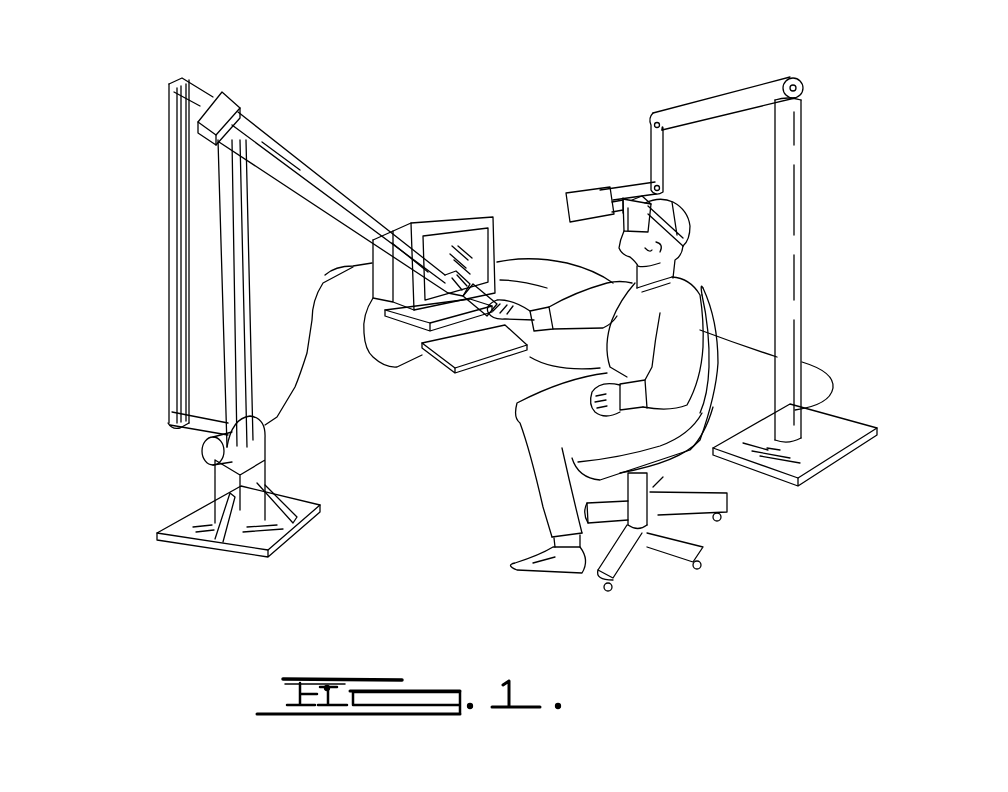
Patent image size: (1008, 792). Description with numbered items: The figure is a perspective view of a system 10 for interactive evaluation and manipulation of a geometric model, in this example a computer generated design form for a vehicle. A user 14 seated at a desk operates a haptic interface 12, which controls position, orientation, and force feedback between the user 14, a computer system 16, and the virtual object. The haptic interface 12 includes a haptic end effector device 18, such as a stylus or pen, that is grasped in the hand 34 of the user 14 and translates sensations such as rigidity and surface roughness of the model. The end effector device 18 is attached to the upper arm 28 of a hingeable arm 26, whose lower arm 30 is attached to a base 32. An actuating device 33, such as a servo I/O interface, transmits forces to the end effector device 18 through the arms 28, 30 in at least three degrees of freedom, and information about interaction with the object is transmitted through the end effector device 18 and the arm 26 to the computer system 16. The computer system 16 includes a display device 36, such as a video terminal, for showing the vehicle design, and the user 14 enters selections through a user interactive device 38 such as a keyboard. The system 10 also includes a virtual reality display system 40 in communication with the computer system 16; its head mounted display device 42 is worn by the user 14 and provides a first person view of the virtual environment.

The system 10 is at (474, 117).
The haptic interface 12 is at (365, 186).
The user 14 is at (615, 395).
The computer system 16 is at (444, 241).
The haptic end effector device 18 is at (483, 297).
The hingeable arm 26 is at (256, 106).
The upper arm 28 is at (340, 188).
The lower arm 30 is at (231, 324).
The base 32 is at (282, 540).
The actuating device 33 is at (200, 448).
The hand 34 is at (522, 303).
The display device 36 is at (478, 224).
The user interactive device 38 is at (437, 360).
The virtual reality display system 40 is at (707, 92).
The head mounted display device 42 is at (637, 201).